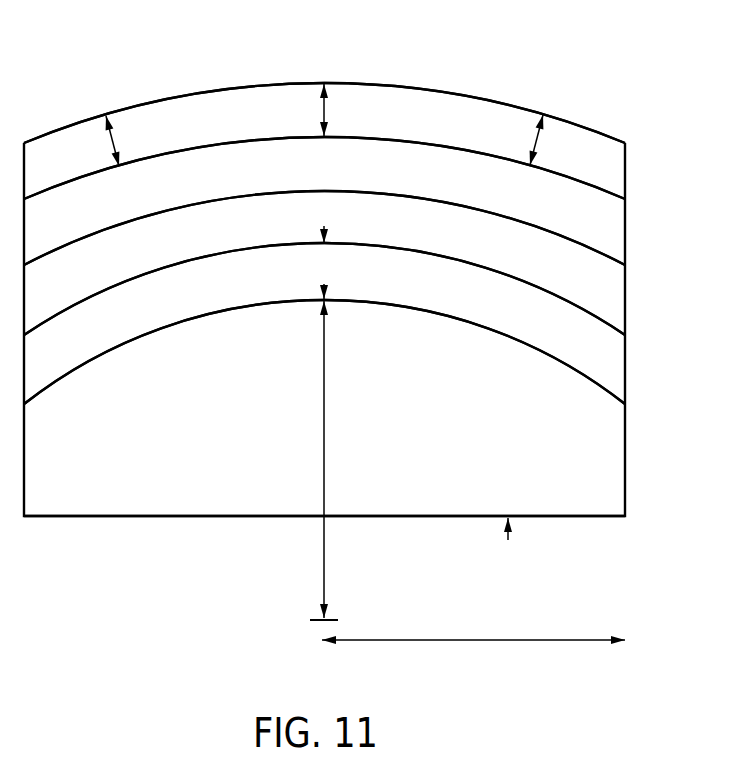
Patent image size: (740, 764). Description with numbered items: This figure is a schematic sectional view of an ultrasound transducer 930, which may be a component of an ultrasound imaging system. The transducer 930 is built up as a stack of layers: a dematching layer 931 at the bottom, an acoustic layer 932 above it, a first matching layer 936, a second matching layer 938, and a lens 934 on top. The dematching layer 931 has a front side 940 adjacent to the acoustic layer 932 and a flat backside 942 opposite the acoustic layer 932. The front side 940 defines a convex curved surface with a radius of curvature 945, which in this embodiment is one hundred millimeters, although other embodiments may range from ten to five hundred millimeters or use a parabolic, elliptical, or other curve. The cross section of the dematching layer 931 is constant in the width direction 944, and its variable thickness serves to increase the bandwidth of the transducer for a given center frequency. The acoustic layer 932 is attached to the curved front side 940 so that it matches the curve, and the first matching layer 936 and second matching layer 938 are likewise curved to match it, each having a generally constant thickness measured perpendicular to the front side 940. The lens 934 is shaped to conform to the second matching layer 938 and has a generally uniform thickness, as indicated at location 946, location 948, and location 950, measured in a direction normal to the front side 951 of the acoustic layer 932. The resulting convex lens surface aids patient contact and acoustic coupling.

The ultrasound transducer 930 is at (592, 70).
The dematching layer 931 is at (493, 404).
The acoustic layer 932 is at (493, 299).
The lens 934 is at (493, 136).
The first matching layer 936 is at (493, 242).
The second matching layer 938 is at (493, 189).
The front side 940 is at (327, 284).
The backside 942 is at (508, 540).
The width direction 944 is at (529, 641).
The radius of curvature 945 is at (326, 472).
The location 946 is at (120, 139).
The location 948 is at (328, 108).
The location 950 is at (540, 143).
The front side of the acoustic layer 951 is at (326, 226).